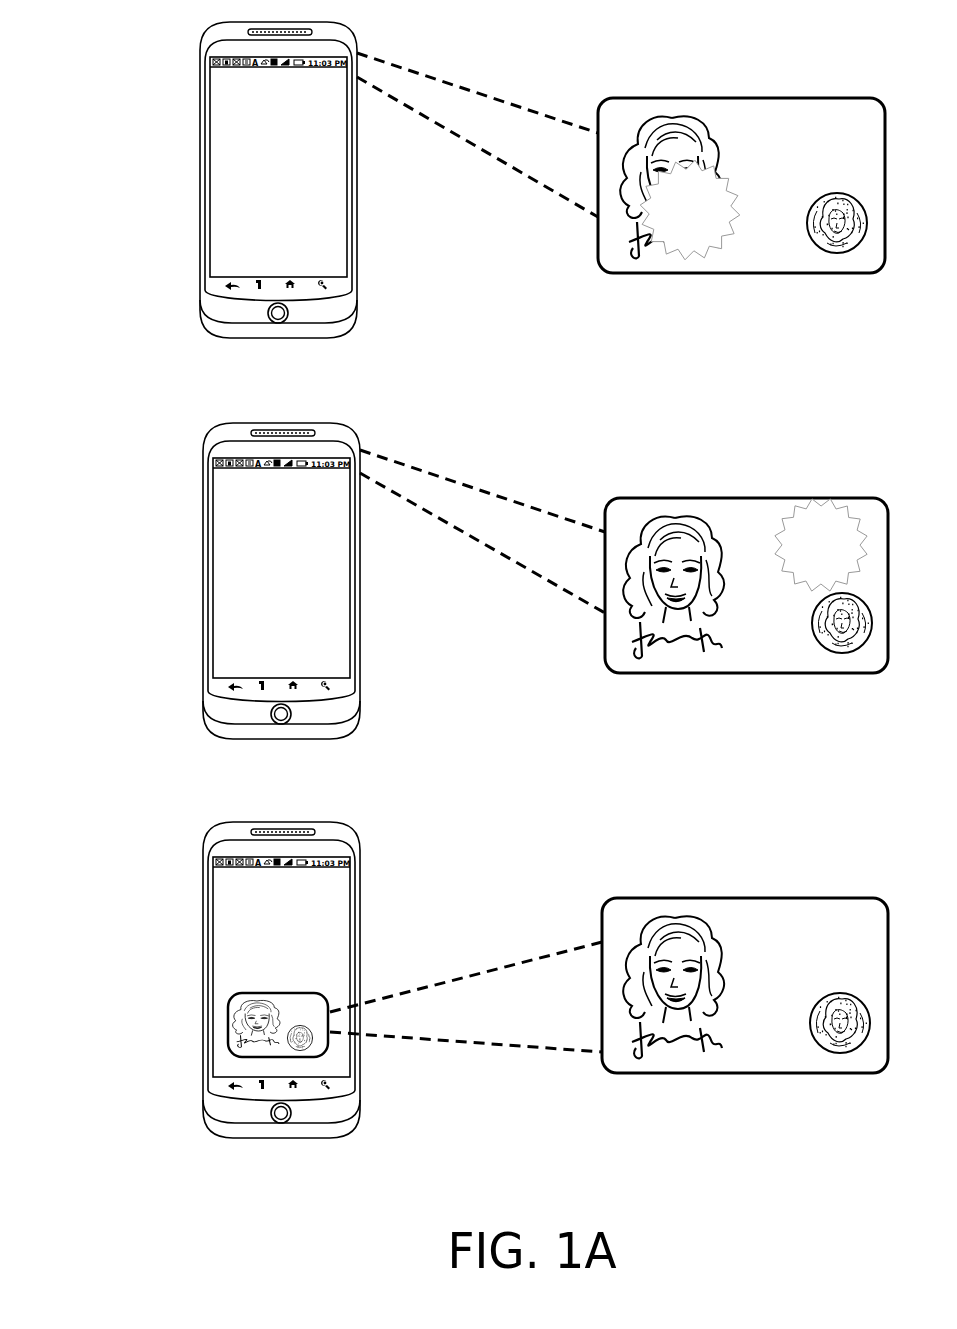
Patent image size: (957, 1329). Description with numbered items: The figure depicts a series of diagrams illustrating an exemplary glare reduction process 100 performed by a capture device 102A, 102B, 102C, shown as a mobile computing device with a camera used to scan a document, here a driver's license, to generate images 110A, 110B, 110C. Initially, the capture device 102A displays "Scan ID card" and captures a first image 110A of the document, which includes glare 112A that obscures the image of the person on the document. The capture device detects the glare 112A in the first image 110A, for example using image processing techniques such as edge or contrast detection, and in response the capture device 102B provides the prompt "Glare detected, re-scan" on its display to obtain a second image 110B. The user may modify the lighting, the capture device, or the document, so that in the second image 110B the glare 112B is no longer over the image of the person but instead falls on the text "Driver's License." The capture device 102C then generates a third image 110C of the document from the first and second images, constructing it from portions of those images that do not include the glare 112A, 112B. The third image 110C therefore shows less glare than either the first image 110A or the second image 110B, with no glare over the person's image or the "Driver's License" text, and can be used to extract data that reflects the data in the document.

The glare reduction process 100 is at (91, 69).
The capture device 102A is at (203, 222).
The capture device 102B is at (206, 556).
The capture device 102C is at (206, 916).
The first image 110A is at (735, 198).
The second image 110B is at (740, 554).
The third image 110C is at (660, 898).
The glare 112A is at (680, 258).
The glare 112B is at (790, 500).